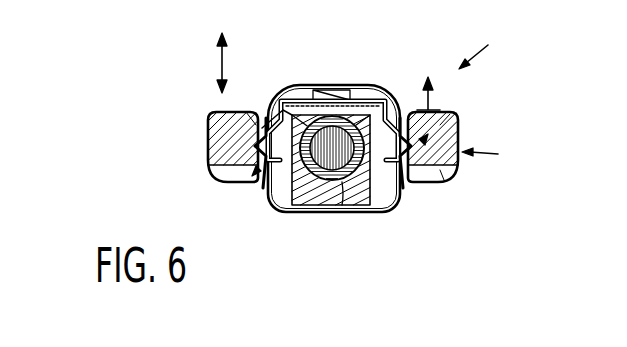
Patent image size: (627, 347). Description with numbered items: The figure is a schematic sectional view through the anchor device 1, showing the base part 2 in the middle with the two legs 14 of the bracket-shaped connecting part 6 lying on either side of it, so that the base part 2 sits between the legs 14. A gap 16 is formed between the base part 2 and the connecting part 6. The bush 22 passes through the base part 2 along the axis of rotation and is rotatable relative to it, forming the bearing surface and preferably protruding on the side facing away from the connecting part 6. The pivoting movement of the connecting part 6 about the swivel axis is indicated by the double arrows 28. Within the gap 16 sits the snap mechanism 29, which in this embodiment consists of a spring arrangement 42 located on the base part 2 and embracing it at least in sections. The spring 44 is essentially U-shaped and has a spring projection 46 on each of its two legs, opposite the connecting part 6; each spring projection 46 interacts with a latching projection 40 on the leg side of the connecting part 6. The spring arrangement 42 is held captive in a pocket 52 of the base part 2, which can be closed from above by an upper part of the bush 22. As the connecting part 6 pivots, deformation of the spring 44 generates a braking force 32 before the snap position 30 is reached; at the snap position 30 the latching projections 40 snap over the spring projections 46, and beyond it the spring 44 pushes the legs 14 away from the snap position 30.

The anchor device 1 is at (478, 44).
The base part 2 is at (286, 194).
The connecting part 6 is at (488, 154).
The legs 14 is at (213, 152).
The gap 16 is at (402, 107).
The bush 22 is at (347, 180).
The double arrows 28 is at (218, 63).
The snap mechanism 29 is at (272, 106).
The snap position 30 is at (444, 180).
The braking force 32 is at (430, 105).
The latching projection 40 is at (246, 112).
The spring arrangement 42 is at (306, 100).
The spring 44 is at (357, 98).
The spring projection 46 is at (262, 193).
The pocket 52 is at (380, 190).